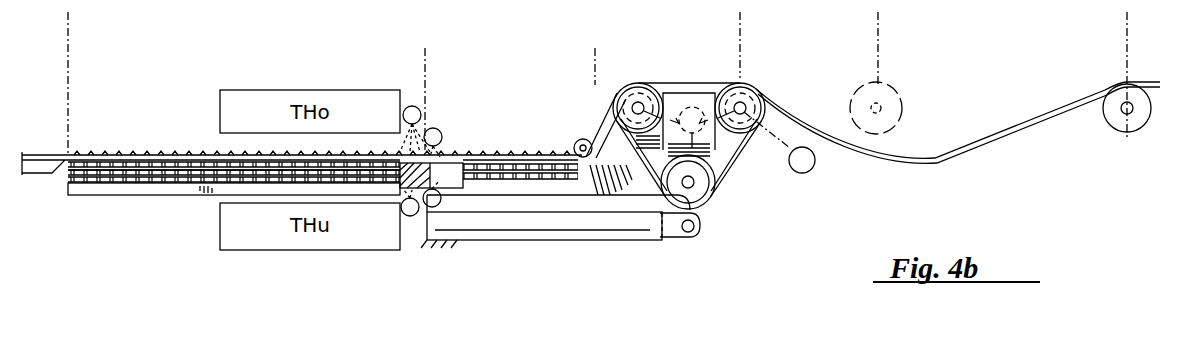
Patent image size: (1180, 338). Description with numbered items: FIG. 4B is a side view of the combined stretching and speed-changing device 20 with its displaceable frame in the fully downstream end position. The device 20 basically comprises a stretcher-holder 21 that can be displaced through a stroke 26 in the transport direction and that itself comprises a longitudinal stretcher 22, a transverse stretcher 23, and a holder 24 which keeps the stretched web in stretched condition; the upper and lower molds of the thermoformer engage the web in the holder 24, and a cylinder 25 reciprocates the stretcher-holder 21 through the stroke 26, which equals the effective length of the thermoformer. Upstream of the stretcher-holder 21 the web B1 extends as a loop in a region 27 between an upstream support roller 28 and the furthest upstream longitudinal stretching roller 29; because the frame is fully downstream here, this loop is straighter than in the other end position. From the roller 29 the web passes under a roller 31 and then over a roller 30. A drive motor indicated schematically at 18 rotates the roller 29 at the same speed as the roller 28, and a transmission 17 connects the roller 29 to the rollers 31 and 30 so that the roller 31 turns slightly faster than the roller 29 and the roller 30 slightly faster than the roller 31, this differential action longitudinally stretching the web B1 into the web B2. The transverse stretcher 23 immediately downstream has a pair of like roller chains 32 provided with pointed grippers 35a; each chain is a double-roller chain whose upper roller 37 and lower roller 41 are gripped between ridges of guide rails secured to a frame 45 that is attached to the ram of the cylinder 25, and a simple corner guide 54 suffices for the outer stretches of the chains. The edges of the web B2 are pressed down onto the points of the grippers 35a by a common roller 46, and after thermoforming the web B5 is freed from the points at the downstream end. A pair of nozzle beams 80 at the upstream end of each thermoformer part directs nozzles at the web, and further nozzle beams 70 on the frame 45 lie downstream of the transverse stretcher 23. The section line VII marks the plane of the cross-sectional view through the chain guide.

The stretcher-holder 21 is at (740, 22).
The holder 24 is at (425, 54).
The transverse stretcher 23 is at (595, 54).
The longitudinal stretcher 22 is at (740, 54).
The stroke 26 is at (878, 22).
The loop region 27 is at (1127, 22).
The section line VII- VII is at (181, 280).
The web B5 is at (60, 150).
The grippers 35a is at (103, 150).
The upper roller 37 is at (170, 166).
The lower roller 41 is at (110, 178).
The roller chains 32 is at (167, 186).
The nozzle beams 80 is at (421, 112).
The guide roller 70 is at (441, 131).
The corner guide 54 is at (455, 165).
The common roller 46 is at (577, 142).
The web B2 is at (603, 110).
The roller 30 is at (628, 96).
The longitudinal stretching roller 29 is at (744, 88).
The roller 31 is at (705, 190).
The transmission 17 is at (693, 106).
The frame 45 is at (634, 195).
The cylinder 25 is at (548, 228).
The web B1 is at (775, 97).
The upstream support roller 28 is at (1133, 130).
The drive motor 18 is at (816, 163).
The combined stretching and speed-changing device 20 is at (806, 203).